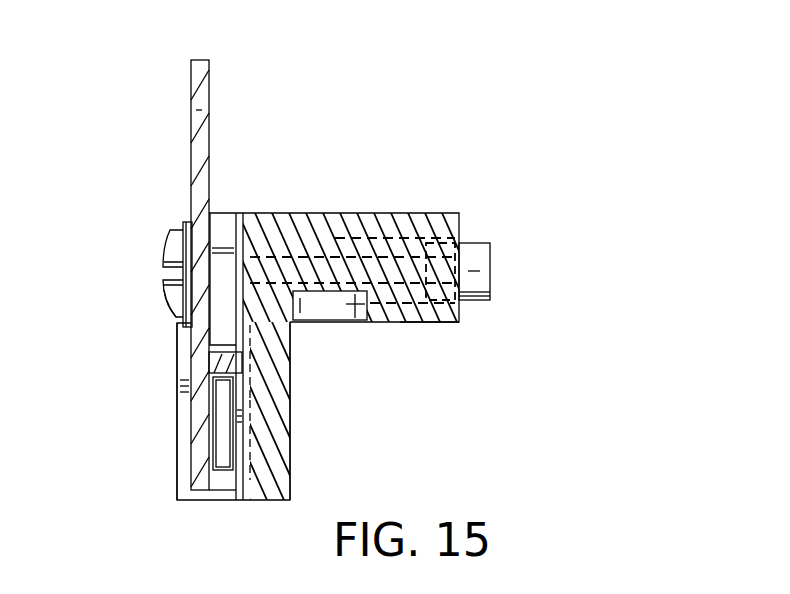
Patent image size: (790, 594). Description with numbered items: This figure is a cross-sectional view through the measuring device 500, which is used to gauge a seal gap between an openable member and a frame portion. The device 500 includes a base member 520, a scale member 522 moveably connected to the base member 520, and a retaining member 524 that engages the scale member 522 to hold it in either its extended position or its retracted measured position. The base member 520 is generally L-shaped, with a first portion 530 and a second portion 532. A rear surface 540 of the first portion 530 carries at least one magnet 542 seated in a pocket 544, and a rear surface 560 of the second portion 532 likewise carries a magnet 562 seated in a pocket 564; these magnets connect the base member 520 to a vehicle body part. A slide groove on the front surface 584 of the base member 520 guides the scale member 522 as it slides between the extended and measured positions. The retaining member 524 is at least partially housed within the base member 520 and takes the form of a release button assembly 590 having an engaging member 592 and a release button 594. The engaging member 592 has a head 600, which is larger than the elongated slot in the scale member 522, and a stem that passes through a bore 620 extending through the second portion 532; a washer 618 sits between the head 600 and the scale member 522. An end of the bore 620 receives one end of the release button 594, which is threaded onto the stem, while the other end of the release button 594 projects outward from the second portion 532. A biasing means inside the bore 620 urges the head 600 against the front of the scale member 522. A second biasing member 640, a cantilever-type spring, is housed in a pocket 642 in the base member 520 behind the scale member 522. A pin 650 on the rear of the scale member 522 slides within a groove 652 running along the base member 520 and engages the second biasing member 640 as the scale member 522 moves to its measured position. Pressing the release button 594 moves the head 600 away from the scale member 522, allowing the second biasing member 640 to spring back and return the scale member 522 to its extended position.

The device 500 is at (410, 86).
The base member 520 is at (255, 492).
The scale member 522 is at (186, 77).
The retaining member 524 is at (155, 300).
The first portion 530 is at (288, 440).
The second portion 532 is at (330, 222).
The rear surface 540 is at (288, 408).
The magnet 542 is at (283, 473).
The pocket 544 is at (285, 385).
The rear surface 560 is at (440, 322).
The magnet 562 is at (324, 310).
The pocket 564 is at (352, 310).
The front surface 584 is at (177, 458).
The release button assembly 590 is at (484, 219).
The engaging member 592 is at (158, 252).
The release button 594 is at (487, 268).
The head 600 is at (172, 245).
The washer 618 is at (187, 220).
The bore 620 is at (254, 232).
The second biasing member 640 is at (222, 410).
The pocket 642 is at (222, 490).
The pin 650 is at (208, 365).
The groove 652 is at (240, 496).